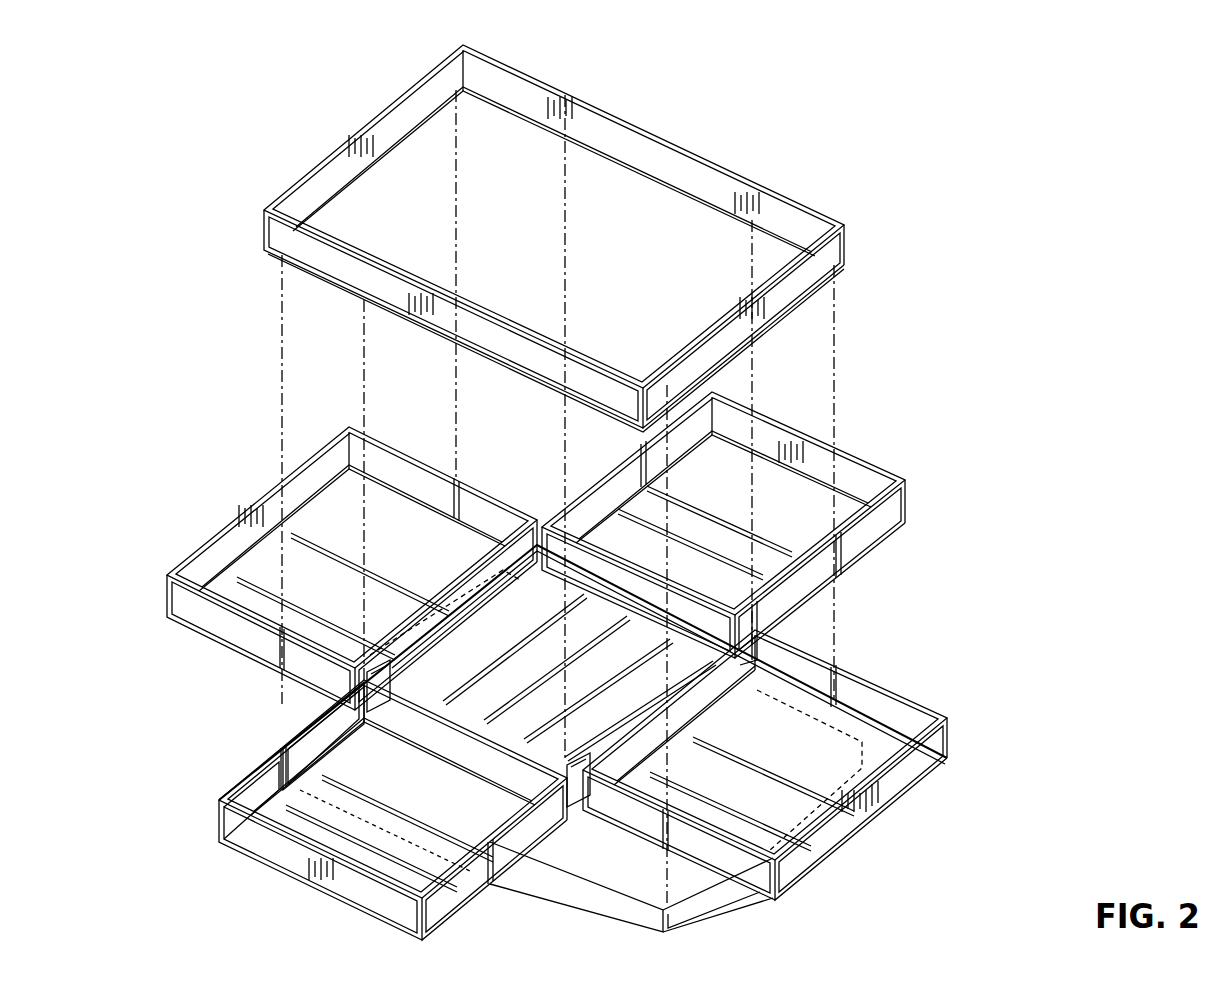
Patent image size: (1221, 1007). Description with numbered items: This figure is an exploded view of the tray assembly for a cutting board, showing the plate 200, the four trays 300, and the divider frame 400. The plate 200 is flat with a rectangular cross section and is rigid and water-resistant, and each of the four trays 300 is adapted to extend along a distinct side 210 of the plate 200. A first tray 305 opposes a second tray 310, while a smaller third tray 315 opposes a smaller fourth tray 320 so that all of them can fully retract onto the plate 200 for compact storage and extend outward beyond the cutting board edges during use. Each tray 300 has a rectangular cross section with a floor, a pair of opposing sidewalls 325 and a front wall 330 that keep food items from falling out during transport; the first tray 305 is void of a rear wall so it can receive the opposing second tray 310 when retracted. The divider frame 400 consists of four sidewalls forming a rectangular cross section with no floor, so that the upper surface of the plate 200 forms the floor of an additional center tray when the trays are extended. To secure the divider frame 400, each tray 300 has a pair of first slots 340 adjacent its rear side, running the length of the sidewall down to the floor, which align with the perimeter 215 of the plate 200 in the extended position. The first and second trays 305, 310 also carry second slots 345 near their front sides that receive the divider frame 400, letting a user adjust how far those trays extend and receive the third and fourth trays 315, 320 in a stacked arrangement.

The plate 200 is at (690, 908).
The side 210 is at (327, 695).
The perimeter 215 is at (885, 800).
The tray 300 is at (542, 818).
The first tray 305 is at (385, 897).
The second tray 310 is at (862, 478).
The third tray 315 is at (247, 508).
The fourth tray 320 is at (917, 770).
The sidewalls 325 is at (907, 690).
The front wall 330 is at (785, 877).
The first slots 340 is at (783, 628).
The second slots 345 is at (282, 742).
The divider frame 400 is at (668, 161).